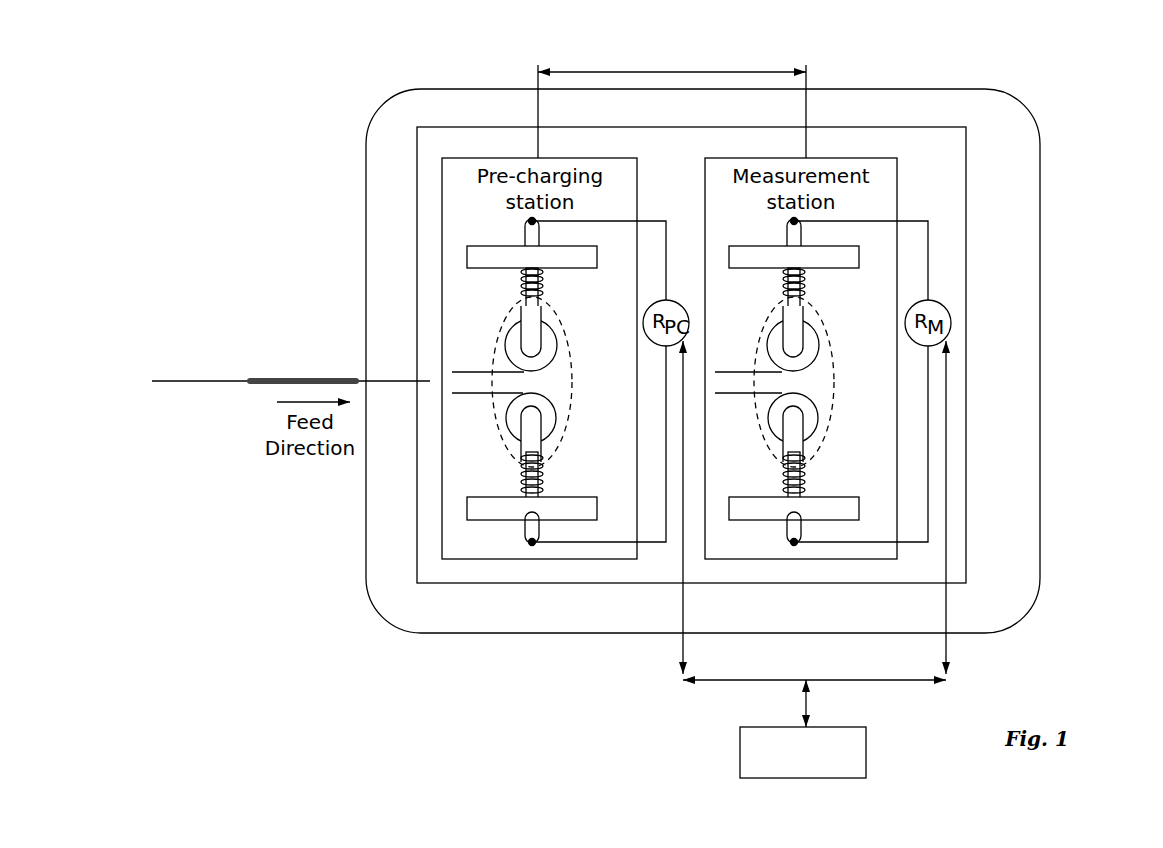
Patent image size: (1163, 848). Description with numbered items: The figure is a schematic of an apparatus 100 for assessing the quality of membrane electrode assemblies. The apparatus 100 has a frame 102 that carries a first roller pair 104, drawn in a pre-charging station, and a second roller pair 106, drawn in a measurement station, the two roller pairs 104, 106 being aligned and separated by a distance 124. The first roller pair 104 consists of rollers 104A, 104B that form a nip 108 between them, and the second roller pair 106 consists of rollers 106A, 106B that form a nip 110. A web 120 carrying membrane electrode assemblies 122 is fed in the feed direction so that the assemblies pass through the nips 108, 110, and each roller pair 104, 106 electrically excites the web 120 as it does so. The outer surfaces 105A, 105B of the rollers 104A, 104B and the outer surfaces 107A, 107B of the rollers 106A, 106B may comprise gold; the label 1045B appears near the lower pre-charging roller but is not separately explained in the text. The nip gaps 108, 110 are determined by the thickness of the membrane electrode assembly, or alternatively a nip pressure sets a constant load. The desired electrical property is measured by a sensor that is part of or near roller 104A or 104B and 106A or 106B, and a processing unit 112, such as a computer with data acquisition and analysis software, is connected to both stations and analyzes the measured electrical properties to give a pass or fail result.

The apparatus 100 is at (1108, 100).
The frame 102 is at (684, 153).
The first roller pair 104 is at (544, 382).
The roller 104A is at (551, 322).
The roller 104B is at (544, 469).
The outer surface 105A is at (557, 344).
The outer surface 105B is at (557, 434).
The lower pre-charging electrode contact 1045B is at (600, 475).
The second roller pair 106 is at (806, 382).
The roller 106A is at (813, 322).
The roller 106B is at (806, 469).
The outer surface 107A is at (819, 344).
The outer surface 107B is at (819, 434).
The nip 108 is at (459, 437).
The nip 110 is at (721, 437).
The processing unit 112 is at (803, 729).
The web 120 is at (201, 380).
The membrane electrode assembly 122 is at (292, 380).
The distance 124 is at (673, 64).